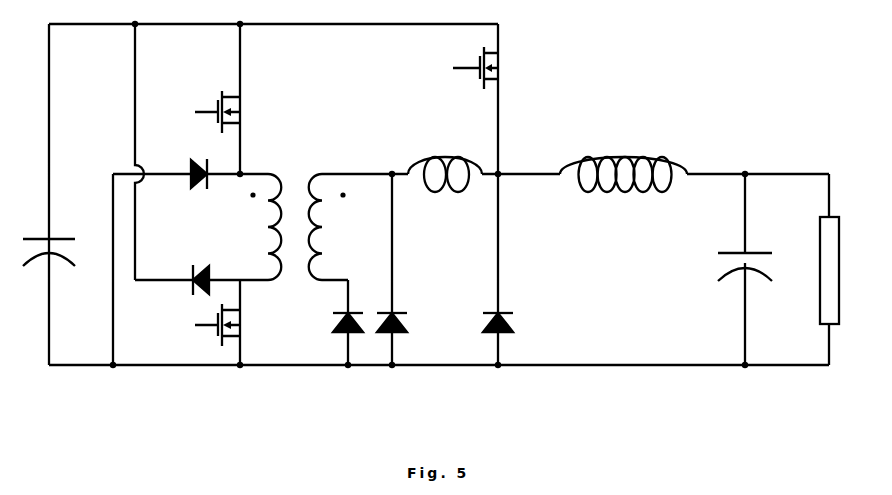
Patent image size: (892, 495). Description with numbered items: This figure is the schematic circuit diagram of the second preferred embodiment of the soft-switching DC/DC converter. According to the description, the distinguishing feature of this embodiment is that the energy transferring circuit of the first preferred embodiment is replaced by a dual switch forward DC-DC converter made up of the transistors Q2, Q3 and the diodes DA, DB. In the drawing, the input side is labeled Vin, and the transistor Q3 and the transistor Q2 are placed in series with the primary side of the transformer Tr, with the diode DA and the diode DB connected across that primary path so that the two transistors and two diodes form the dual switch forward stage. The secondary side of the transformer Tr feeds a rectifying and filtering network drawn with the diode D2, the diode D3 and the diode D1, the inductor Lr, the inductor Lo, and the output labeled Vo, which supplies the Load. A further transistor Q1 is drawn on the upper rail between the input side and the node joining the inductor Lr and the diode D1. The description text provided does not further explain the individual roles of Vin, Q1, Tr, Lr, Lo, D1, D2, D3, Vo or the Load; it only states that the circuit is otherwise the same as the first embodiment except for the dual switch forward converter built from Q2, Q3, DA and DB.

The input voltage source / input capacitor Vin is at (45, 235).
The transistor Q3 is at (203, 112).
The transistor Q2 is at (203, 325).
The first switch (MOSFET) Q1 is at (460, 68).
The diode DA is at (198, 187).
The diode DB is at (198, 266).
The transformer Tr is at (297, 237).
The resonant inductor Lr is at (445, 159).
The output inductor Lo is at (623, 160).
The first diode D1 is at (482, 319).
The second diode D2 is at (331, 322).
The third diode D3 is at (400, 310).
The output voltage / output capacitor Vo is at (726, 264).
The load resistor Load is at (824, 301).